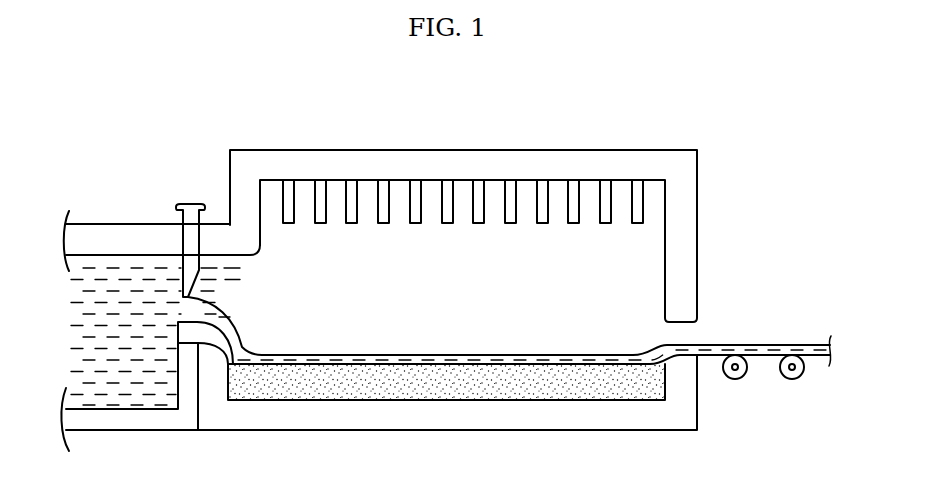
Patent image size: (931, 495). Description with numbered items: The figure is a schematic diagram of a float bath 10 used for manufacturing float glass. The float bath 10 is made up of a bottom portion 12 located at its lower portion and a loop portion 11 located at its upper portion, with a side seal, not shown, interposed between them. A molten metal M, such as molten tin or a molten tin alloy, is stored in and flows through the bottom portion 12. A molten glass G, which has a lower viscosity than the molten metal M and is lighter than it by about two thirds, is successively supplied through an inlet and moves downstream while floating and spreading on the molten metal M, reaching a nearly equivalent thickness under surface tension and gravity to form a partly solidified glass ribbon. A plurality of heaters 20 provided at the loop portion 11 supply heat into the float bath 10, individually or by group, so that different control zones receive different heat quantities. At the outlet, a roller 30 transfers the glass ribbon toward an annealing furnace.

The float bath 10 is at (489, 126).
The loop portion 11 is at (336, 157).
The bottom portion 12 is at (292, 421).
The heater 20 is at (386, 193).
The roller 30 is at (735, 380).
The molten glass G is at (294, 356).
The molten metal M is at (538, 381).